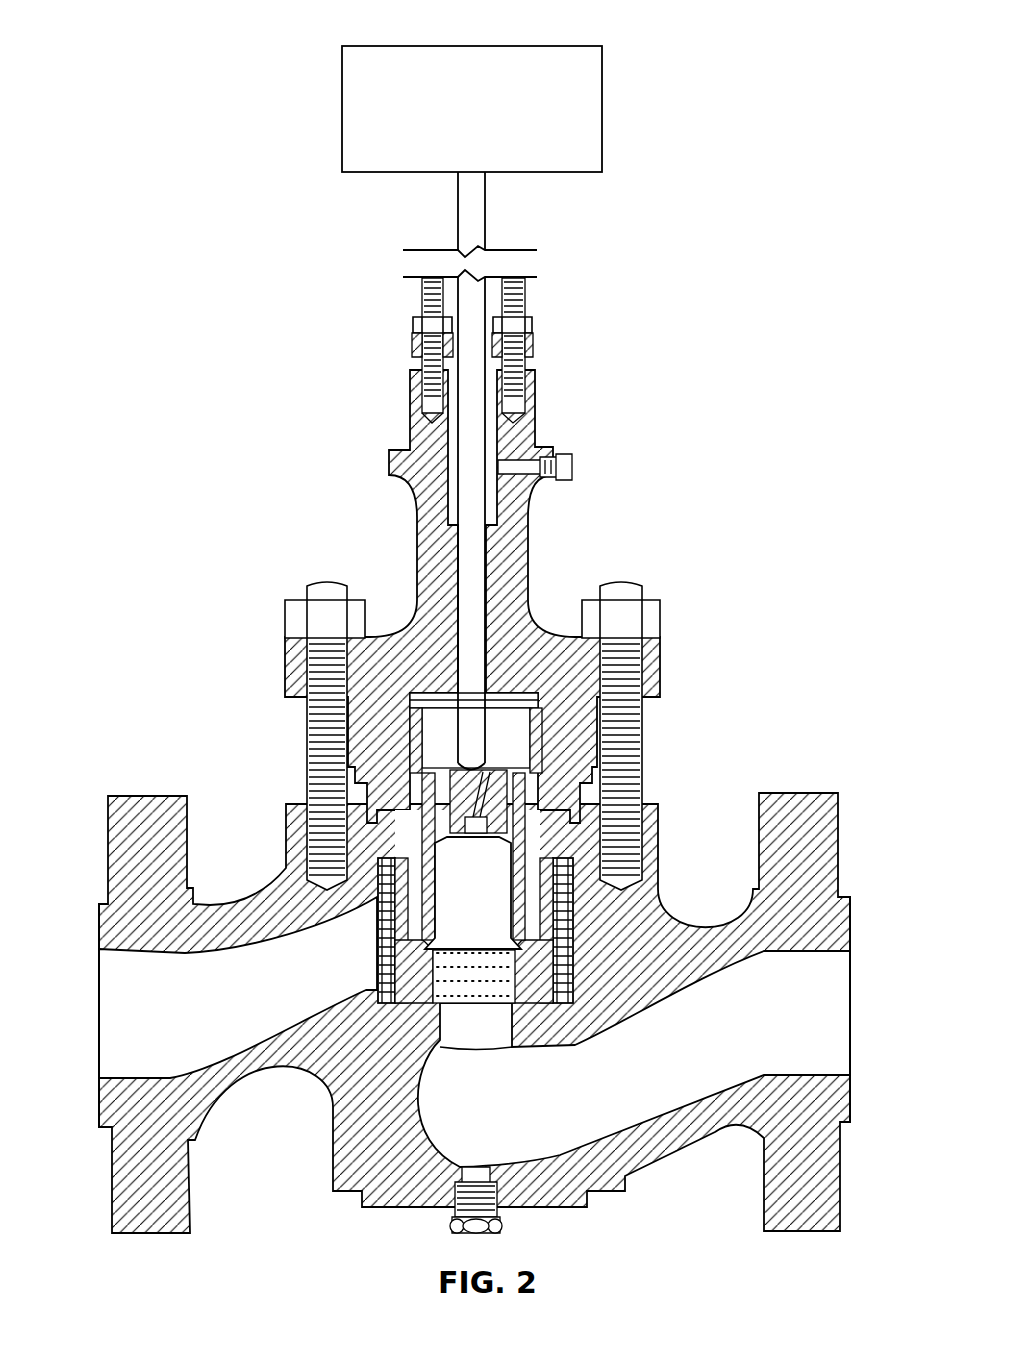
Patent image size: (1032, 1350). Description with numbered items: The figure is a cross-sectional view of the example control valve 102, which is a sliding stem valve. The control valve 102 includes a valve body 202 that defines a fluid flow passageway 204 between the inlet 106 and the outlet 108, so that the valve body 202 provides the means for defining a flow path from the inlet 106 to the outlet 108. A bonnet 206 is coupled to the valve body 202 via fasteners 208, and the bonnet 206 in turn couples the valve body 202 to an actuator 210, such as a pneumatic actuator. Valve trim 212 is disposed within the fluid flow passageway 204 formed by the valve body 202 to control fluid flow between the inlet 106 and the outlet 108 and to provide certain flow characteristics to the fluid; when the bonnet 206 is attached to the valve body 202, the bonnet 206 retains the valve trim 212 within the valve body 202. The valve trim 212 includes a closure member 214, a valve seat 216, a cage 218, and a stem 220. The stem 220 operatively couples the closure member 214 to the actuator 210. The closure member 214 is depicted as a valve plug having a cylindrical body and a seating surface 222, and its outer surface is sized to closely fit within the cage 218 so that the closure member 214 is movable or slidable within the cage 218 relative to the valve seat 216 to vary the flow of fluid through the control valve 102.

The control valve 102 is at (767, 38).
The inlet 106 is at (99, 1046).
The outlet 108 is at (850, 1012).
The valve body 202 is at (142, 796).
The fluid flow passageway 204 is at (535, 1115).
The bonnet 206 is at (530, 560).
The fasteners 208 is at (321, 584).
The actuator 210 is at (602, 102).
The valve trim 212 is at (512, 740).
The closure member 214 is at (428, 828).
The valve seat 216 is at (377, 941).
The cage 218 is at (571, 929).
The stem 220 is at (487, 454).
The seating surface 222 is at (427, 950).